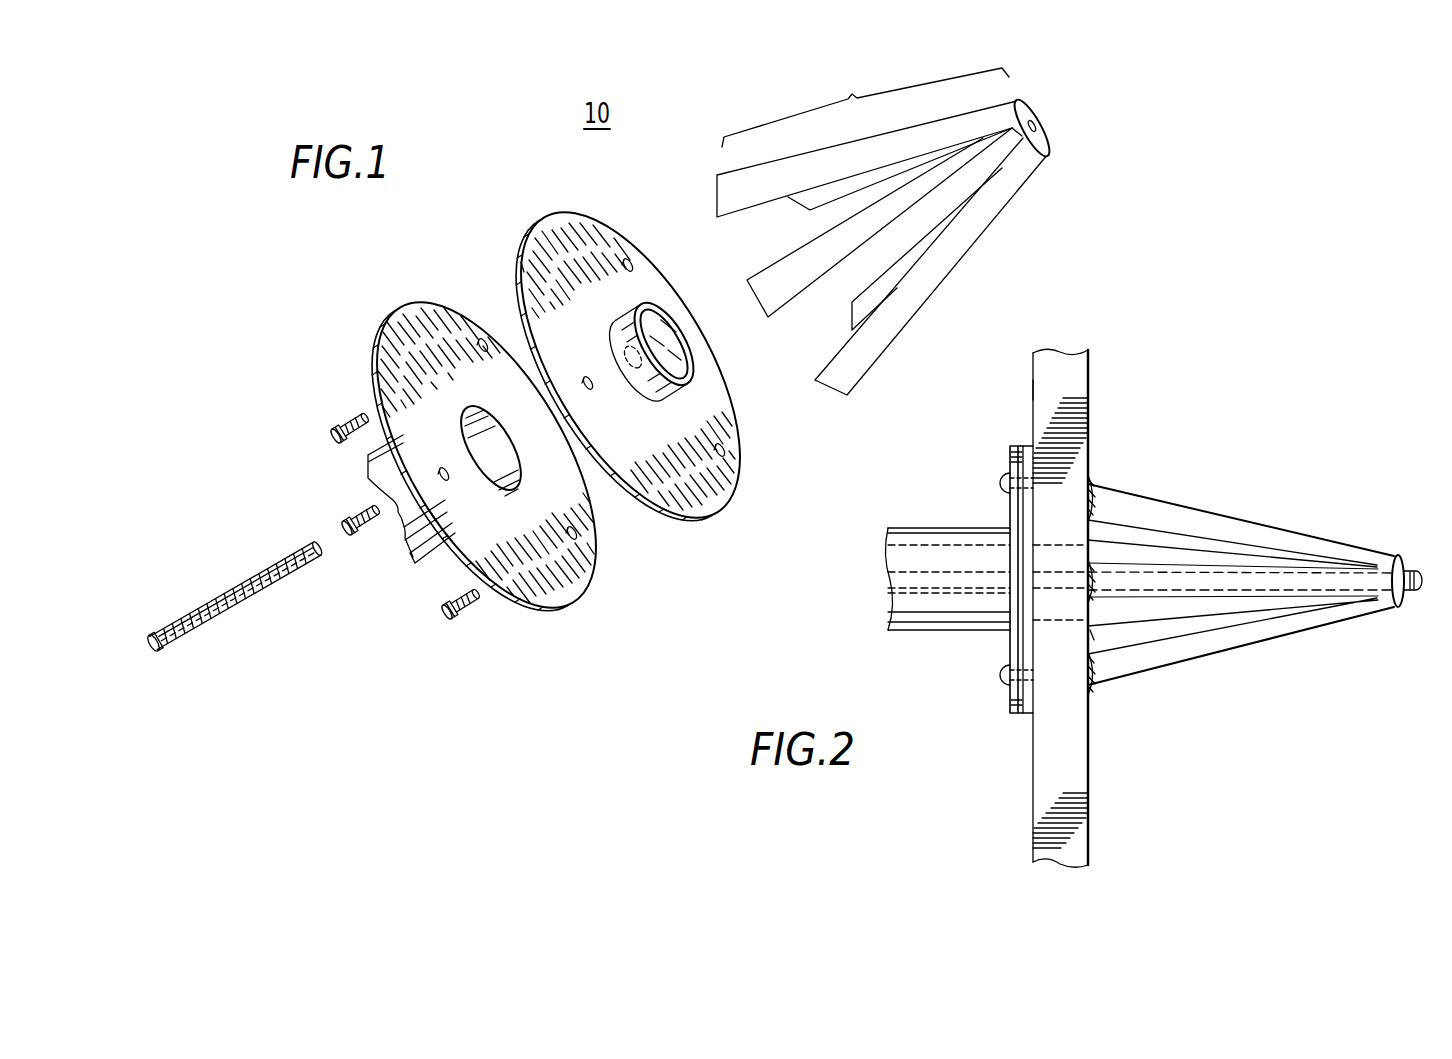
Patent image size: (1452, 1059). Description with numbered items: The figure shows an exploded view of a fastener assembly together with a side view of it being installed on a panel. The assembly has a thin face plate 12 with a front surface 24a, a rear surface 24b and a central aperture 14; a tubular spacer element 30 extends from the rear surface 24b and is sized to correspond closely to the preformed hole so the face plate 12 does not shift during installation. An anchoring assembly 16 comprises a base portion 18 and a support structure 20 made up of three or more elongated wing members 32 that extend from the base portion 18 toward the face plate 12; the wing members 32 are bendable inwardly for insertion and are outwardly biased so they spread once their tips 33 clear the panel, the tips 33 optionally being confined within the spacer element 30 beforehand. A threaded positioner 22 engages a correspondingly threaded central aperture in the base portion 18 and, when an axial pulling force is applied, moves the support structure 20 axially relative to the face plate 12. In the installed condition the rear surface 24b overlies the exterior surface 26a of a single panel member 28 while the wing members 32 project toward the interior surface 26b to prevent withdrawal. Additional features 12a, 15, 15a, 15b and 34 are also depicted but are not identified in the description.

In FIG. 1, the face plate 12 is at (746, 428).
In FIG. 2, the face plate 12 is at (1020, 632).
In FIG. 1, the fastener holes of hub disk 12a is at (628, 259).
In FIG. 1, the central aperture 14 is at (639, 406).
In FIG. 1, the backing disk 15 is at (406, 346).
In FIG. 2, the backing disk 15 is at (1008, 710).
In FIG. 1, the holes of backing disk 15a is at (483, 339).
In FIG. 1, the bolts 15b is at (348, 417).
In FIG. 2, the bolts 15b is at (1002, 484).
In FIG. 1, the anchoring assembly 16 is at (903, 228).
In FIG. 1, the base portion 18 is at (1041, 135).
In FIG. 2, the base portion 18 is at (1408, 600).
In FIG. 1, the support structure 20 is at (865, 104).
In FIG. 1, the positioner 22 is at (230, 610).
In FIG. 2, the positioner 22 is at (1237, 583).
In FIG. 1, the front surface 24a is at (519, 262).
In FIG. 2, the front surface 24a is at (1015, 458).
In FIG. 1, the rear surface 24b is at (585, 308).
In FIG. 2, the rear surface 24b is at (1034, 467).
In FIG. 2, the exterior surface 26a is at (1040, 393).
In FIG. 2, the interior surface 26b is at (1094, 565).
In FIG. 2, the single panel member 28 is at (1070, 757).
In FIG. 1, the tubular spacer element 30 is at (668, 388).
In FIG. 1, the wing members 32 is at (858, 306).
In FIG. 2, the wing members 32 is at (1210, 543).
In FIG. 1, the wing member tips 33 is at (748, 295).
In FIG. 2, the spoke attachment 34 is at (1093, 637).